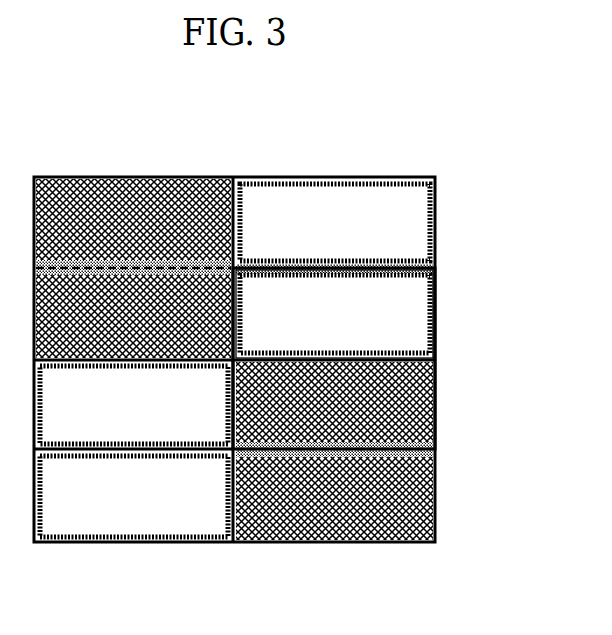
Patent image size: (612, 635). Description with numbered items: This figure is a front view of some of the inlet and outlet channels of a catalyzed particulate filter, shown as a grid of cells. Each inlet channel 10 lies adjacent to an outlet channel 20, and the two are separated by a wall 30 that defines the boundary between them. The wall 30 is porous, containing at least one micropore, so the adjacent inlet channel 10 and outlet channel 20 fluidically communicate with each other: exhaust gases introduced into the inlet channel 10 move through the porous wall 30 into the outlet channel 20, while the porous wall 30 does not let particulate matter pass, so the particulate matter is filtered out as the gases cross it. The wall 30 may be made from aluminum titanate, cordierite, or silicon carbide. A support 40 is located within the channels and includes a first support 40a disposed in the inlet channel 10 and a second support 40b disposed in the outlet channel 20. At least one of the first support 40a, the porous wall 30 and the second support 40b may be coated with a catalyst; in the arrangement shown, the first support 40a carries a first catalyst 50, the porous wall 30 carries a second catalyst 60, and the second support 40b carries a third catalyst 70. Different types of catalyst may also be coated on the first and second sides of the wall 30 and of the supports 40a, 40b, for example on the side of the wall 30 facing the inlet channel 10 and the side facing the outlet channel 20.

The inlet channel 10 is at (334, 211).
The outlet channel 20 is at (131, 208).
The wall 30 is at (138, 363).
The support 40 is at (512, 293).
The first support 40a is at (437, 285).
The second support 40b is at (436, 432).
The first catalyst 50 is at (375, 262).
The second catalyst 60 is at (280, 352).
The third catalyst 70 is at (437, 455).